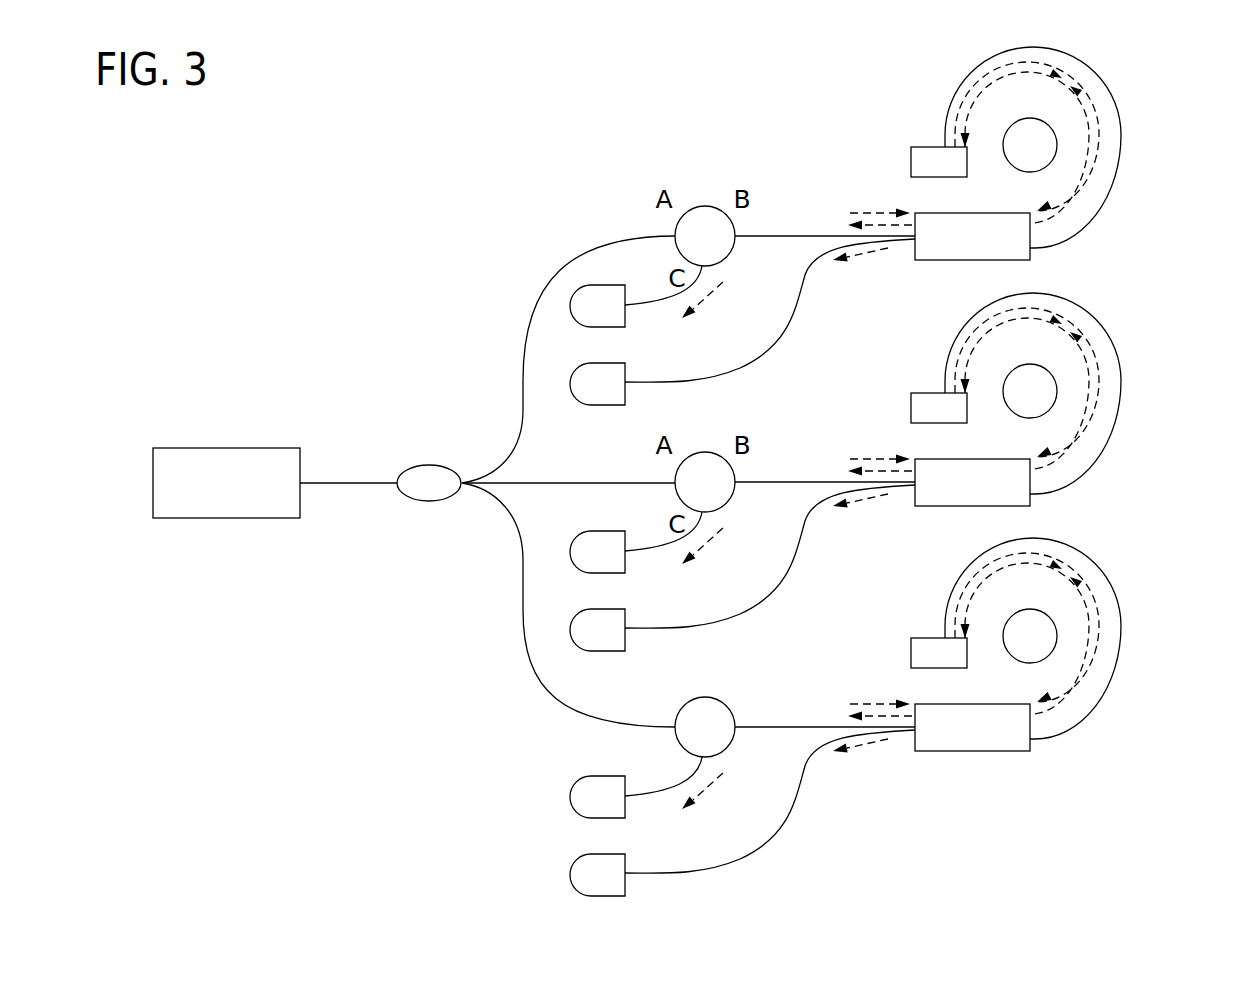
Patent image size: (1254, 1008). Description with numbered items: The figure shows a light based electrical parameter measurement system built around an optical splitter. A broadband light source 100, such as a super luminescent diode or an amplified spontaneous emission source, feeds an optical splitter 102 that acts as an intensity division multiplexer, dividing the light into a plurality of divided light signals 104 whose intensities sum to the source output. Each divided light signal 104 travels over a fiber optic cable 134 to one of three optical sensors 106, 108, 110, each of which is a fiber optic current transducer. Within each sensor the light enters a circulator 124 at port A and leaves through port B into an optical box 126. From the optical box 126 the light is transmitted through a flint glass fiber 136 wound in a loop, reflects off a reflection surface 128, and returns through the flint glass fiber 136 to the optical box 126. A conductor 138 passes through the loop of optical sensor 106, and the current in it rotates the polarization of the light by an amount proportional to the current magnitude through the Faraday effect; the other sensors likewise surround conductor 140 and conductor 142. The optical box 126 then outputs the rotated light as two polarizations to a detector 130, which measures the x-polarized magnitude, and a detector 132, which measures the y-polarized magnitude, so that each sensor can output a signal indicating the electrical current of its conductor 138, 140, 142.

The broadband light source 100 is at (207, 497).
The optical splitter 102 is at (411, 495).
The divided light signal 104 is at (568, 473).
The optical sensor 106 is at (1080, 147).
The optical sensor 108 is at (1090, 393).
The optical sensor 110 is at (1093, 638).
The circulator 124 is at (686, 249).
The optical box 126 is at (953, 250).
The reflection surface 128 is at (920, 175).
The detector 130 is at (581, 319).
The detector 132 is at (581, 397).
The fiber optic cable 134 is at (582, 252).
The flint glass fiber 136 is at (1120, 124).
The conductor 138 is at (1011, 158).
The conductor 140 is at (1011, 404).
The conductor 142 is at (1011, 649).